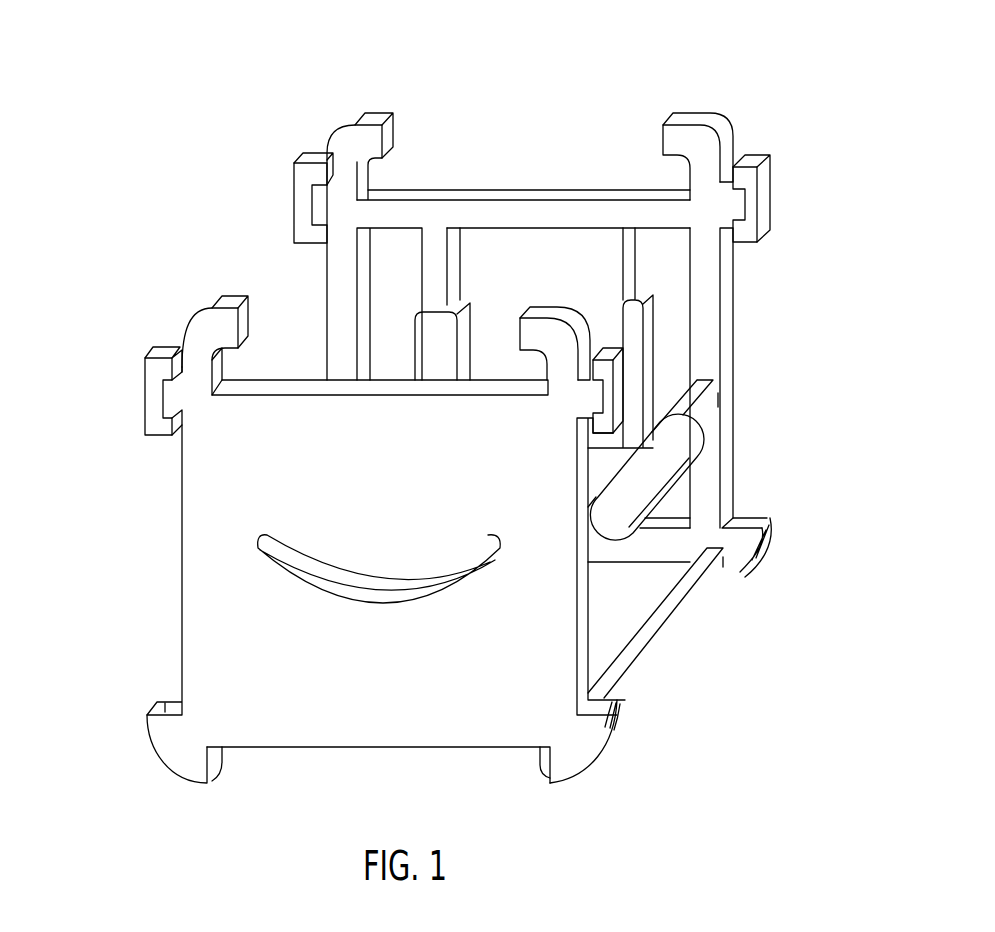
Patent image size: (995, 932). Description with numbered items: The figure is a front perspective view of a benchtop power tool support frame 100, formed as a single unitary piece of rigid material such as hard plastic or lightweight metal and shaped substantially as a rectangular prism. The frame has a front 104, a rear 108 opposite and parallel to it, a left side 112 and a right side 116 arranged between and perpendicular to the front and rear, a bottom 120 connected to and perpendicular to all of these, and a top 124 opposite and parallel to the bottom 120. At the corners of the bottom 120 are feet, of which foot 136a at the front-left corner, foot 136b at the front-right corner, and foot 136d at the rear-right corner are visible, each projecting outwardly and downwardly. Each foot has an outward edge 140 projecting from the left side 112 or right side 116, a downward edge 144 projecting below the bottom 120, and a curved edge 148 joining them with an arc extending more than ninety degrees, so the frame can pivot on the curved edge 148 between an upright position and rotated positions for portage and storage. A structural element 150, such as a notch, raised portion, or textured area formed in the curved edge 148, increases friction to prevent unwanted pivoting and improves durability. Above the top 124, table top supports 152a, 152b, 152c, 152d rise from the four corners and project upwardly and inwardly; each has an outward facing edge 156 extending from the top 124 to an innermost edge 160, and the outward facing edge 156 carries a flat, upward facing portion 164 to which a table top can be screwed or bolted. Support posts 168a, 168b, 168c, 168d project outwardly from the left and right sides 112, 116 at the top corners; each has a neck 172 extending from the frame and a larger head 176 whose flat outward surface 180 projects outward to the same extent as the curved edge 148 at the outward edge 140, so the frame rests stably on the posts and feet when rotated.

The benchtop power tool support frame 100 is at (120, 95).
The front 104 is at (118, 548).
The rear 108 is at (568, 163).
The left side 112 is at (174, 285).
The right side 116 is at (807, 394).
The bottom 120 is at (712, 670).
The top 124 is at (241, 202).
The foot 136a is at (160, 763).
The foot 136b is at (580, 758).
The foot 136d is at (745, 566).
The outward edge 140 is at (165, 707).
The downward edge 144 is at (217, 762).
The curved edge 148 is at (165, 745).
The structural element 150 is at (767, 530).
The table top support 152a is at (188, 328).
The table top support 152b is at (545, 330).
The table top support 152c is at (346, 123).
The table top support 152d is at (712, 134).
The outward facing edge 156 is at (352, 125).
The innermost edge 160 is at (392, 137).
The flat, upward facing portion 164 is at (394, 128).
The support post 168a is at (148, 395).
The support post 168b is at (600, 398).
The support post 168c is at (302, 215).
The support post 168d is at (760, 212).
The neck 172 is at (163, 425).
The head 176 is at (150, 350).
The flat outward surface 180 is at (290, 225).